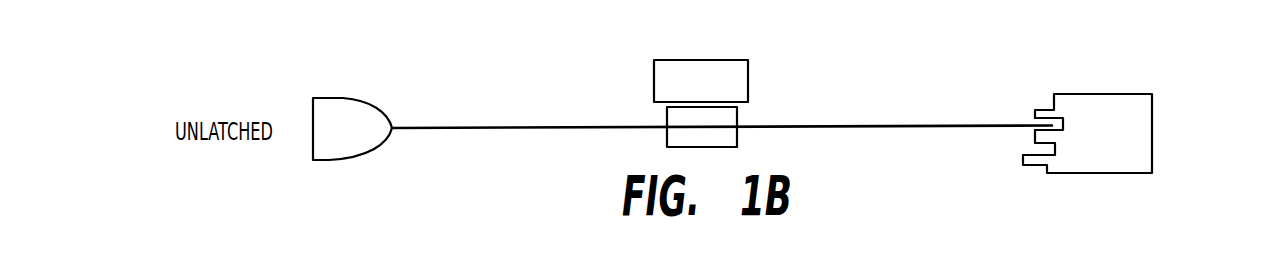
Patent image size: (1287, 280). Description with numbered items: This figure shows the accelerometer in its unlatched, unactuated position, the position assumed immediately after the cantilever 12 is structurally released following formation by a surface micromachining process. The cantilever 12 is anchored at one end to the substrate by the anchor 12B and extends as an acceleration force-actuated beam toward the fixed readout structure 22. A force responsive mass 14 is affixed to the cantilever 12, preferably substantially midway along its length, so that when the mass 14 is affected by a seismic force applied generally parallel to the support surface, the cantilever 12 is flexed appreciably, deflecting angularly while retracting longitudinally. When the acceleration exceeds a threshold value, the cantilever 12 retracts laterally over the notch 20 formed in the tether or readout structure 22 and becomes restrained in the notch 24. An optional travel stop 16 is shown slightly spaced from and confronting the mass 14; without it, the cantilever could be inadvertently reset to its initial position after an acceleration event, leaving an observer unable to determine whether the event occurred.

The anchor 12B is at (347, 98).
The cantilever 12 is at (856, 126).
The force responsive mass 14 is at (667, 137).
The travel stop 16 is at (678, 60).
The notch 20 is at (1047, 121).
The readout structure 22 is at (1104, 94).
The notch 24 is at (1042, 148).